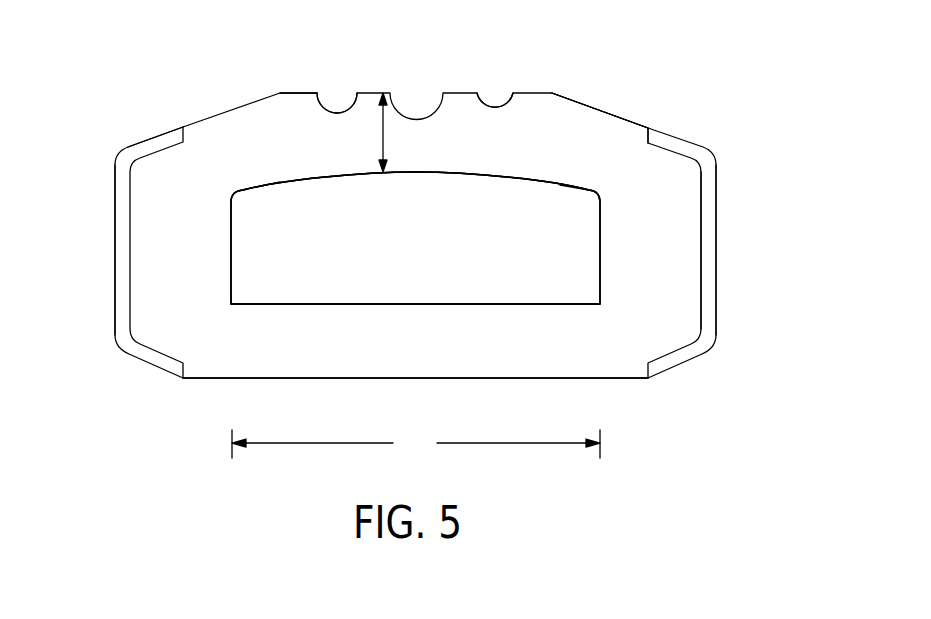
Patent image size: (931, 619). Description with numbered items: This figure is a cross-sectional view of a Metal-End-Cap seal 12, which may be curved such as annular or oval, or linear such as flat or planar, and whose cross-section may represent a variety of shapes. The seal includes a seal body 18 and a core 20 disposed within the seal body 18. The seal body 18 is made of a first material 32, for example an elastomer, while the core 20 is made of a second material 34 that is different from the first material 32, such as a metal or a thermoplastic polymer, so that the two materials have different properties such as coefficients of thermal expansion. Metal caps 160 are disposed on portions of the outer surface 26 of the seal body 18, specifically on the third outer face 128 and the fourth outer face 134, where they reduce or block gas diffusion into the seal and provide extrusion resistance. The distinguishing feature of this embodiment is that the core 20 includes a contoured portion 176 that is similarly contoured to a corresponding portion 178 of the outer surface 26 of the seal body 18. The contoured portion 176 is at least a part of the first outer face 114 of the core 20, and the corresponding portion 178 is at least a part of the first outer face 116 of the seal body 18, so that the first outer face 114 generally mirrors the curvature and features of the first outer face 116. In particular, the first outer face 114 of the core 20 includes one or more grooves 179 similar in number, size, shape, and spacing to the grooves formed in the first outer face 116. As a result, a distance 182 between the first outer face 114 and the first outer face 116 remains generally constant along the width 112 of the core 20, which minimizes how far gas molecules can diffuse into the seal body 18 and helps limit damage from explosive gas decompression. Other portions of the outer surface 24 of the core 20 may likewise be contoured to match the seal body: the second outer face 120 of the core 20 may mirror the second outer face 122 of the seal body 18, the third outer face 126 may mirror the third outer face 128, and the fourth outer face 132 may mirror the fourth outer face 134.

The Metal-End-Cap seal 12 is at (733, 102).
The seal body 18 is at (610, 113).
The core 20 is at (577, 187).
The outer surface of the core 24 is at (280, 183).
The outer surface of the seal body 26 is at (219, 112).
The first material 32 is at (571, 155).
The second material 34 is at (433, 265).
The width of the core 112 is at (416, 445).
The first outer face of the core 114 is at (297, 177).
The first outer face of the seal body 116 is at (297, 92).
The second outer face of the core 120 is at (417, 305).
The second outer face of the seal body 122 is at (417, 380).
The third outer face of the core 126 is at (600, 253).
The third outer face of the seal body 128 is at (703, 252).
The fourth outer face of the core 132 is at (230, 255).
The fourth outer face of the seal body 134 is at (130, 253).
The metal caps 160 is at (711, 293).
The contoured portion 176 is at (417, 172).
The corresponding portion 178 is at (373, 92).
The grooves 179 is at (490, 110).
The distance 182 is at (387, 132).